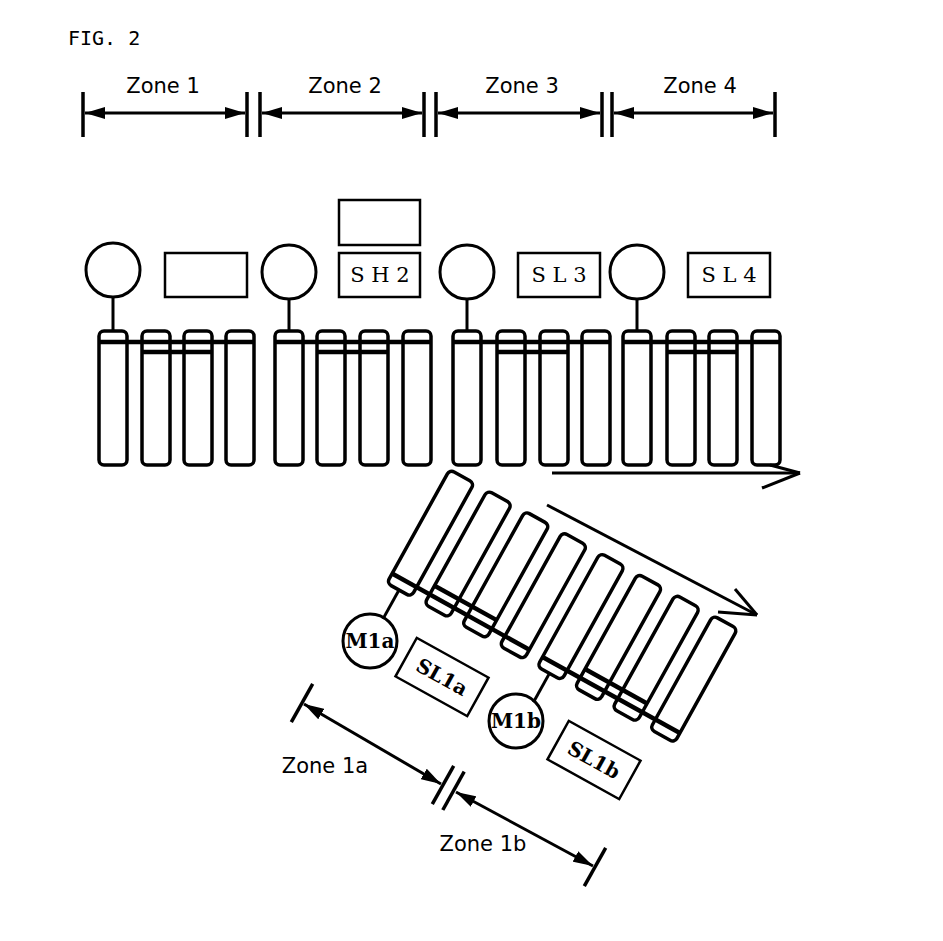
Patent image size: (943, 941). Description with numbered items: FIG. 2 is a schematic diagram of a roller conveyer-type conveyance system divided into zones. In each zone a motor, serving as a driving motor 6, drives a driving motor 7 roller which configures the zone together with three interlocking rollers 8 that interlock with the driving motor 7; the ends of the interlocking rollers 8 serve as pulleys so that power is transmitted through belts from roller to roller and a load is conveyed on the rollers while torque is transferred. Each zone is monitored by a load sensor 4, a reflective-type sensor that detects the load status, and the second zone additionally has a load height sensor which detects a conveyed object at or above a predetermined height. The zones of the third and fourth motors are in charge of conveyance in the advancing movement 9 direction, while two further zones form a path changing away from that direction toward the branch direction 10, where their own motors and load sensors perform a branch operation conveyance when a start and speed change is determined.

The load sensor 4 is at (200, 252).
The driving motor 6 is at (89, 276).
The driving motor 7 is at (103, 466).
The interlocking rollers 8 is at (148, 468).
The advancing movement 9 is at (764, 476).
The branch direction 10 is at (698, 583).